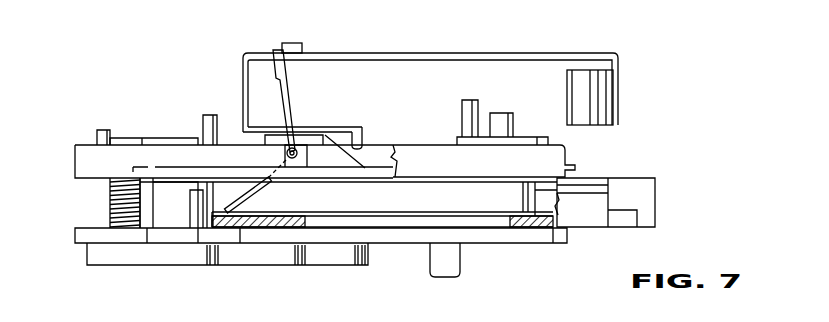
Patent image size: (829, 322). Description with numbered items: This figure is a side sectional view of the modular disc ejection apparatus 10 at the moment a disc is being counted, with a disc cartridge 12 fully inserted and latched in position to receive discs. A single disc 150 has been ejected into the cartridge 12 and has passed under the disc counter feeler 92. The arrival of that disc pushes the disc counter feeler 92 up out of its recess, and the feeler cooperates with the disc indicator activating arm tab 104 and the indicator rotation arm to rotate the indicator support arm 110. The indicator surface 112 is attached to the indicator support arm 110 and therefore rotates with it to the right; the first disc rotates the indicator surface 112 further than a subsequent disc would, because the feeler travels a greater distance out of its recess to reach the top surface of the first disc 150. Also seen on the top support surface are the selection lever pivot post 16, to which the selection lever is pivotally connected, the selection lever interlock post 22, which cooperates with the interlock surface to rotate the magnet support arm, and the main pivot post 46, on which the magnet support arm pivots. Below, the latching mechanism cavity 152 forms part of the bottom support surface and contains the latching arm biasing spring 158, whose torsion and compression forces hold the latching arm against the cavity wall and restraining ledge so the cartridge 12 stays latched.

The modular disc ejection apparatus 10 is at (512, 250).
The disc cartridge 12 is at (662, 204).
The selection lever pivot post 16 is at (507, 113).
The selection lever interlock post 22 is at (466, 100).
The main pivot post 46 is at (302, 47).
The disc counter feeler 92 is at (257, 190).
The disc indicator activating arm tab 104 is at (278, 50).
The indicator support arm 110 is at (526, 53).
The indicator surface 112 is at (620, 92).
The disc 150 is at (425, 212).
The latching mechanism cavity 152 is at (130, 263).
The latching arm biasing spring 158 is at (110, 205).